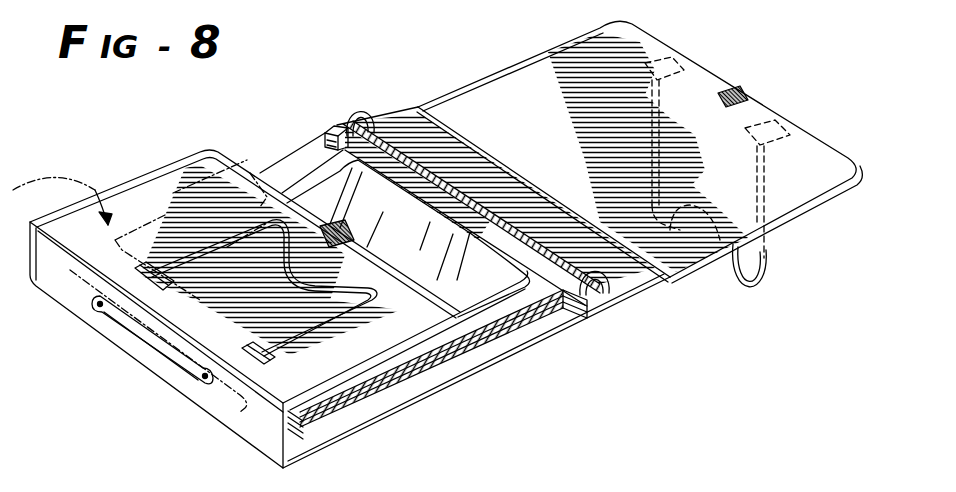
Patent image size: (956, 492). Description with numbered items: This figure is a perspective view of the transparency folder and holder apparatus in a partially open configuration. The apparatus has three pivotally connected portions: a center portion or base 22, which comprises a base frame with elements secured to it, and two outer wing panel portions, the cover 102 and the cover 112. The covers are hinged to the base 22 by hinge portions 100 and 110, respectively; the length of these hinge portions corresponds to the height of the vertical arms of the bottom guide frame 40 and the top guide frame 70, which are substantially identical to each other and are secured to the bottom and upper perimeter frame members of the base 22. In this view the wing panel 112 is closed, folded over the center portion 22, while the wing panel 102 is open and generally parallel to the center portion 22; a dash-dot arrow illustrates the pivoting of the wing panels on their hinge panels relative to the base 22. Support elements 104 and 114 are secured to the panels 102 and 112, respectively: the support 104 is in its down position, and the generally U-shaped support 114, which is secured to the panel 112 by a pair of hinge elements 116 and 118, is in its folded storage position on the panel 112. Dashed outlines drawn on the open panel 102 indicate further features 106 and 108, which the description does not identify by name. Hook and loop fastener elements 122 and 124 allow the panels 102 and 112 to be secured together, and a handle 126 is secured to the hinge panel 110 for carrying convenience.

The base 22 is at (494, 378).
The bottom guide frame 40 is at (612, 252).
The top guide frame 70 is at (350, 125).
The hinge portion 100 is at (645, 293).
The wing panel portion 102 is at (828, 168).
The support element 104 is at (745, 270).
The strap 106 is at (790, 126).
The strap 108 is at (698, 62).
The hinge portion 110 is at (258, 422).
The wing panel portion 112 is at (133, 197).
The support element 114 is at (293, 236).
The hinge element 116 is at (270, 356).
The hinge element 118 is at (170, 278).
The hook and loop fastener element 122 is at (740, 93).
The hook and loop fastener element 124 is at (373, 246).
The handle 126 is at (106, 312).